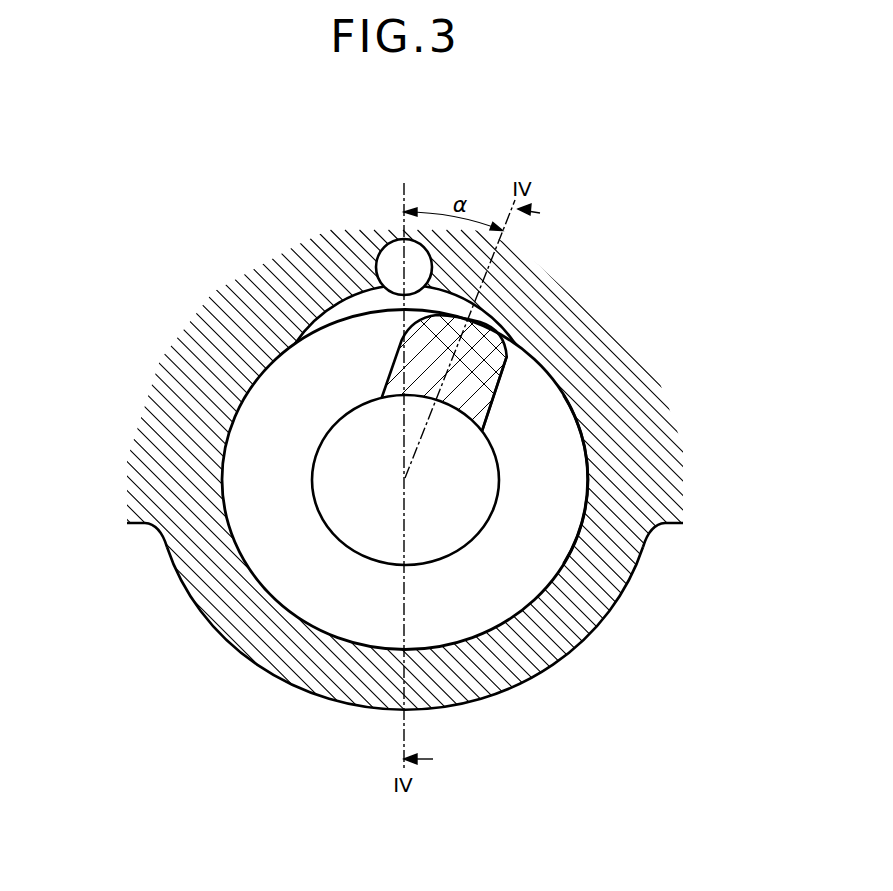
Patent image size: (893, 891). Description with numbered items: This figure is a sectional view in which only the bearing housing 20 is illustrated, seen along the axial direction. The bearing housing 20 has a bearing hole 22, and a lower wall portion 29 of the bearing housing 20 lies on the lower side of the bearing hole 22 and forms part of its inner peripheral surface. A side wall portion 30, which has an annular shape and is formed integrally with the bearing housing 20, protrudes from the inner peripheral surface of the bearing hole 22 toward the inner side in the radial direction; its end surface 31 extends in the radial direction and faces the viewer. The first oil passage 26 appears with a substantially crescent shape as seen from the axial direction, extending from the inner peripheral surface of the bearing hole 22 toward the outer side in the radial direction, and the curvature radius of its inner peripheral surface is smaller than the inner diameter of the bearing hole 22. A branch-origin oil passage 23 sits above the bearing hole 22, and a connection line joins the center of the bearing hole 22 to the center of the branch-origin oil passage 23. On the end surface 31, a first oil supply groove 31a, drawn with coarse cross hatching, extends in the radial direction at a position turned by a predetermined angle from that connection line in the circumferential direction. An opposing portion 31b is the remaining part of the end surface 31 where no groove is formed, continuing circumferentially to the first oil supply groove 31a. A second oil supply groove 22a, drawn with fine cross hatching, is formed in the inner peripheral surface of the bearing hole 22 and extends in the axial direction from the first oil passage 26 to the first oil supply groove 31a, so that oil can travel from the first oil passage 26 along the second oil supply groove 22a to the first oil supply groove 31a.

The bearing housing 20 is at (220, 637).
The bearing hole 22 is at (244, 554).
The second oil supply groove 22a is at (455, 316).
The branch-origin oil passage 23 is at (384, 272).
The first oil passage 26 is at (318, 307).
The lower wall portion 29 is at (273, 677).
The side wall portion 30 is at (316, 455).
The end surface 31 is at (312, 480).
The first oil supply groove 31a is at (492, 356).
The opposing portion 31b is at (549, 479).